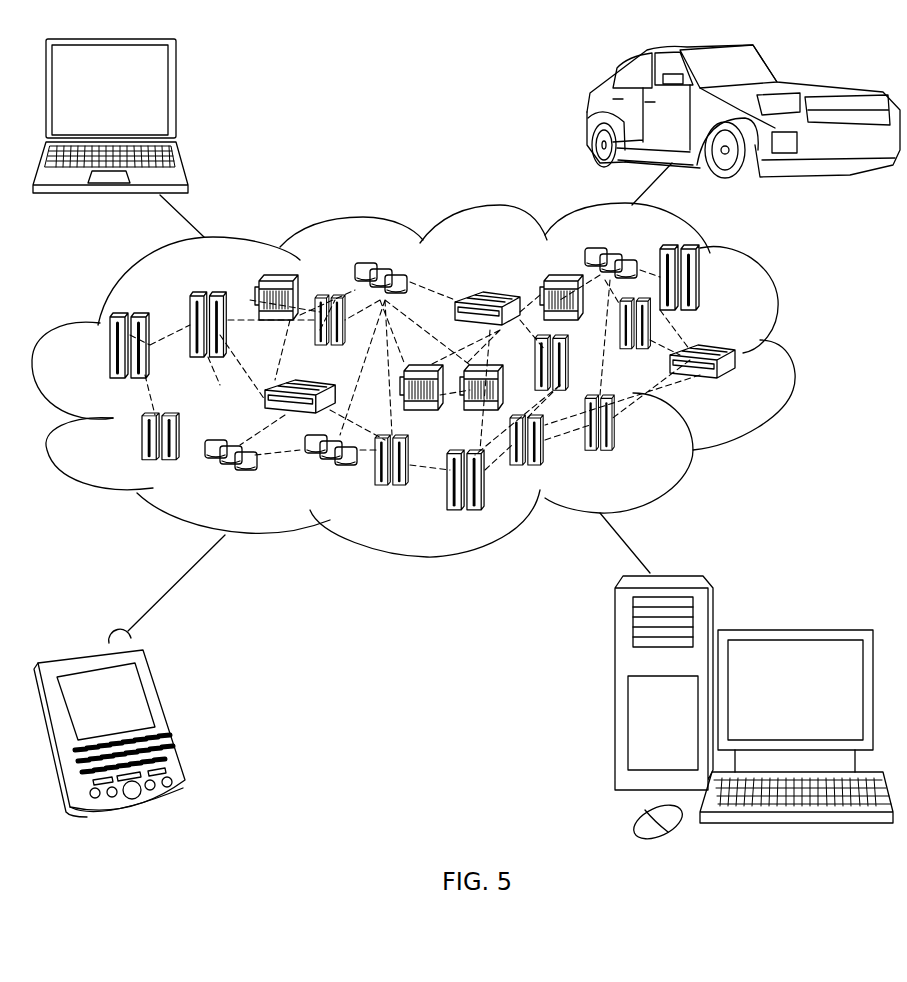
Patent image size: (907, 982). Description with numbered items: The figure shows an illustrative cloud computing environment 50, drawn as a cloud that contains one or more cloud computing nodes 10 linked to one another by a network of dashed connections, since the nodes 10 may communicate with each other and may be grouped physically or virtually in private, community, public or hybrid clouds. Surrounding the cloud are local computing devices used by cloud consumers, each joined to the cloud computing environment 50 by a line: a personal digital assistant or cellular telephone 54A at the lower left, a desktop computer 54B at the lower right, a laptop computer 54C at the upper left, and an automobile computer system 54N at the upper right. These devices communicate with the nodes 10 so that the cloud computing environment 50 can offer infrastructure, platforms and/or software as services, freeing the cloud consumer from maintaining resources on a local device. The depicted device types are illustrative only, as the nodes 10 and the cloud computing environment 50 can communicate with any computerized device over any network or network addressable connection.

The laptop computer 54C is at (177, 98).
The automobile computer system 54N is at (587, 113).
The personal digital assistant (PDA) or cellular telephone 54A is at (167, 715).
The desktop computer 54B is at (793, 630).
The cloud computing environment 50 is at (795, 358).
The cloud computing nodes 10 is at (738, 387).